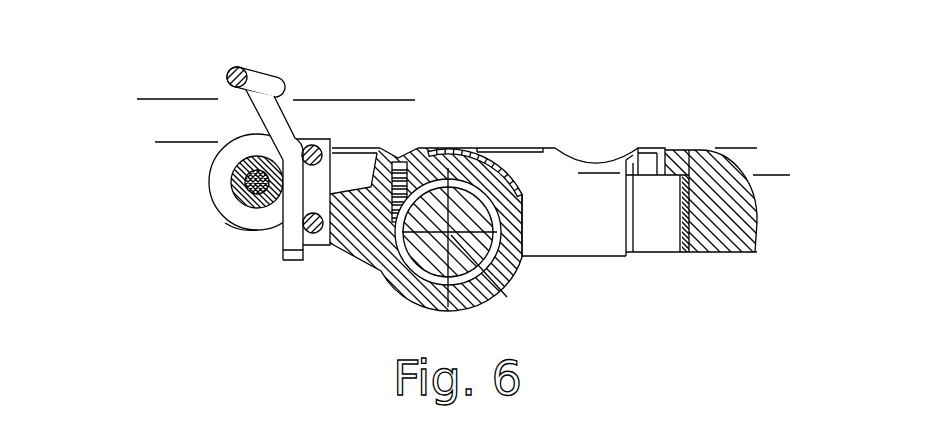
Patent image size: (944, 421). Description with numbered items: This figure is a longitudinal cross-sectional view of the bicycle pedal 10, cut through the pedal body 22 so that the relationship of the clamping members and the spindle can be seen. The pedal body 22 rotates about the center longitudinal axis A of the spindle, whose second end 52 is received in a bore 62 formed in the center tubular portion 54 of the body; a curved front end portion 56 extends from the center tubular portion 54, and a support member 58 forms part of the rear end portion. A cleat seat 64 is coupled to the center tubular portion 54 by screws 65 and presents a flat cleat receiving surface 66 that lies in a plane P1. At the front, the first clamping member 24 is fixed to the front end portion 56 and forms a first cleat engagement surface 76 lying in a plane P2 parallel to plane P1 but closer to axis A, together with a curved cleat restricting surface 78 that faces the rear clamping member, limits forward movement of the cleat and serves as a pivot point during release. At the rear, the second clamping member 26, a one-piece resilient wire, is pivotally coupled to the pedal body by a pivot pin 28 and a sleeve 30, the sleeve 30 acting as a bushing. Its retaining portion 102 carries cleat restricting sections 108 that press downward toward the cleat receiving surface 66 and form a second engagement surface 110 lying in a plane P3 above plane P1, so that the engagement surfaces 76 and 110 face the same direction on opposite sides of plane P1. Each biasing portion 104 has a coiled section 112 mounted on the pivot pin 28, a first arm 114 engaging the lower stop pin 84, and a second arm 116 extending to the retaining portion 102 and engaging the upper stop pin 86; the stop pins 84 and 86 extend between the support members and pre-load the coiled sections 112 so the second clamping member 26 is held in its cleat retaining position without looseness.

The bicycle pedal 10 is at (500, 180).
The pedal body 22 is at (560, 148).
The first clamping member 24 is at (643, 148).
The second clamping member 26 is at (243, 175).
The pivot pin 28 is at (246, 191).
The sleeve 30 is at (231, 168).
The second end of pedal spindle 52 is at (464, 282).
The center tubular portion 54 is at (522, 226).
The curved front end portion 56 is at (758, 214).
The support member 58 is at (279, 234).
The bore 62 is at (413, 270).
The cleat seat 64 is at (450, 147).
The screws 65 is at (400, 156).
The cleat receiving surface 66 is at (503, 148).
The first cleat engagement surface 76 is at (658, 165).
The cleat restricting surface 78 is at (626, 162).
The lower stop pin 84 is at (316, 235).
The upper stop pin 86 is at (321, 146).
The retaining portion 102 is at (226, 71).
The biasing portions 104 is at (218, 217).
The cleat restricting sections 108 is at (279, 81).
The second engagement surface 110 is at (277, 100).
The coiled section 112 is at (238, 229).
The first arm 114 is at (294, 262).
The second arm 116 is at (258, 113).
The center longitudinal axis A is at (488, 279).
The plane P1 is at (737, 148).
The plane P2 is at (773, 175).
The plane P3 is at (374, 100).